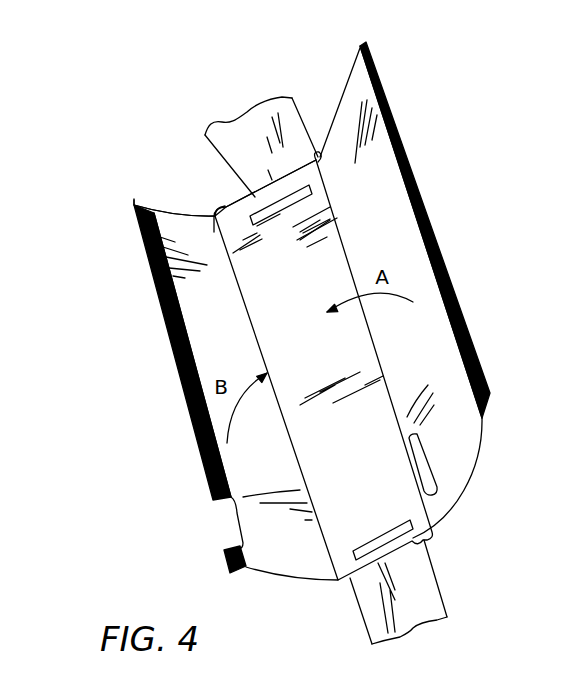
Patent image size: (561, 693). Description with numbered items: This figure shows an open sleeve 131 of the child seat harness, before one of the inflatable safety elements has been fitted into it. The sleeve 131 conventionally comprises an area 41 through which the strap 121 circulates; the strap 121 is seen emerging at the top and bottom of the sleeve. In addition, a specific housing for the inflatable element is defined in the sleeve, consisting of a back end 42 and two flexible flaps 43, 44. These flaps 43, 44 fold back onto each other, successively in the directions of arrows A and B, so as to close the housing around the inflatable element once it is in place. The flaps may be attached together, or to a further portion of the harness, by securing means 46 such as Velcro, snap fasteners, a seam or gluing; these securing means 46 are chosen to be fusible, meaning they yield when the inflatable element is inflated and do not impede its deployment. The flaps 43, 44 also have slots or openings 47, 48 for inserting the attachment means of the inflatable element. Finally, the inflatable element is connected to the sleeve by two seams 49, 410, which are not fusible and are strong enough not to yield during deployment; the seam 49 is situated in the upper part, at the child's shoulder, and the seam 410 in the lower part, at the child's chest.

The sleeve 131 is at (202, 194).
The seam 49 is at (213, 141).
The strap 121 is at (263, 113).
The area for circulating the strap 41 is at (317, 157).
The flexible flap 44 is at (377, 192).
The securing means 46 is at (468, 332).
The flexible flap 43 is at (207, 363).
The slot 47 is at (227, 527).
The slot 48 is at (428, 482).
The seam 410 is at (422, 538).
The back end 42 is at (352, 470).